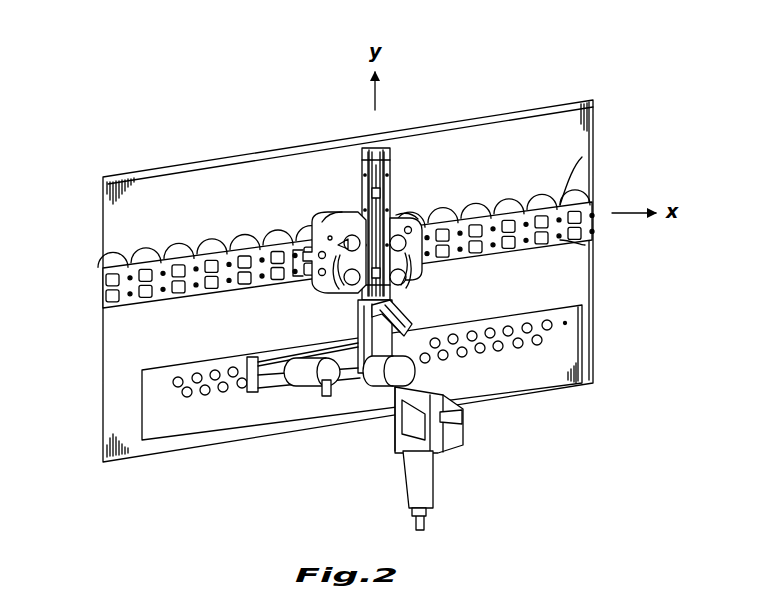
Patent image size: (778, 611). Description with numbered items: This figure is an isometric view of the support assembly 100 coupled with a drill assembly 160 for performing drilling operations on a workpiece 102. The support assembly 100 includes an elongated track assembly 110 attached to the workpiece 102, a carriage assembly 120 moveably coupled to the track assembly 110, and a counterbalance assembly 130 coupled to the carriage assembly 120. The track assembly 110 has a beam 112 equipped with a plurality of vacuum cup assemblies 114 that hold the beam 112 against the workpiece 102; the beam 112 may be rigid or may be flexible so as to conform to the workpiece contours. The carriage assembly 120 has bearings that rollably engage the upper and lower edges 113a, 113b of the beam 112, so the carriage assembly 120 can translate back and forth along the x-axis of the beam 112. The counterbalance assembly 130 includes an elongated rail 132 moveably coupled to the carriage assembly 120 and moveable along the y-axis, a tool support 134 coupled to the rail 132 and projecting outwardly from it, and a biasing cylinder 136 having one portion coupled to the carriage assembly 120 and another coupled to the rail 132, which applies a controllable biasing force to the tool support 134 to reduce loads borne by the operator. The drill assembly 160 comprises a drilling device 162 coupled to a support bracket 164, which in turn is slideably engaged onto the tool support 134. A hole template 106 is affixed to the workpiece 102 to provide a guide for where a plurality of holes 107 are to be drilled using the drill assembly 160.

The support assembly 100 is at (525, 98).
The workpiece 102 is at (564, 280).
The hole template 106 is at (397, 398).
The holes 107 is at (205, 390).
The track assembly 110 is at (369, 213).
The beam 112 is at (577, 230).
The upper edge 113a is at (554, 215).
The lower edge 113b is at (578, 245).
The vacuum cup assemblies 114 is at (120, 254).
The carriage assembly 120 is at (416, 203).
The counterbalance assembly 130 is at (355, 122).
The rail 132 is at (388, 152).
The biasing cylinder 136 is at (362, 202).
The tool support 134 is at (404, 320).
The drill assembly 160 is at (446, 443).
The drilling device 162 is at (397, 430).
The support bracket 164 is at (356, 337).